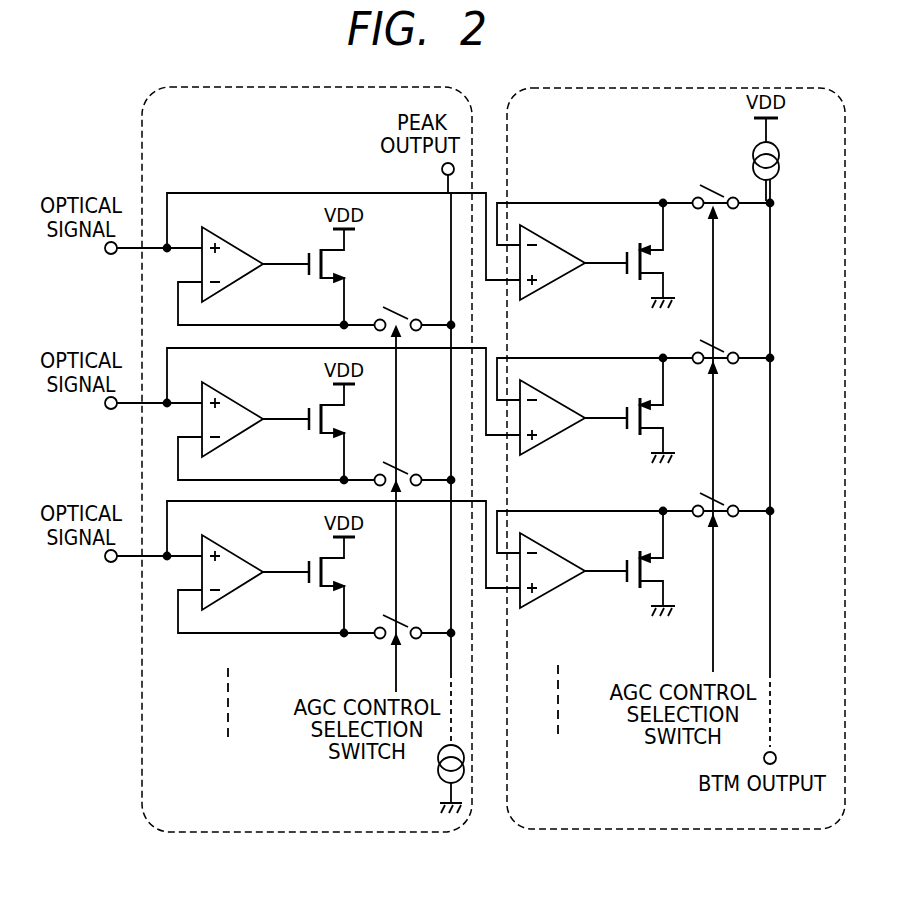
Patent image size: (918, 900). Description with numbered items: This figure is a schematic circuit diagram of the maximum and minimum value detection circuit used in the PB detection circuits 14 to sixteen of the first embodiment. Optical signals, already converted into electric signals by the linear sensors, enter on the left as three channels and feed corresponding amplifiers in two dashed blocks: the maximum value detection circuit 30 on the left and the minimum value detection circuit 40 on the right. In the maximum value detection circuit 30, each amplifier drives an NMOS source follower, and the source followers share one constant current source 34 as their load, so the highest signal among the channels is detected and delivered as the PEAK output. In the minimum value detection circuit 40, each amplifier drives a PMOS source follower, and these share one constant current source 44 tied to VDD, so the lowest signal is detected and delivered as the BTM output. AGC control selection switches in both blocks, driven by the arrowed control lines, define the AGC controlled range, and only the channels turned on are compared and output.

The PB detection circuit 14 is at (604, 60).
The maximum value detection circuit 30 is at (198, 832).
The constant current source 34 is at (440, 770).
The minimum value detection circuit 40 is at (573, 829).
The constant current source 44 is at (773, 178).